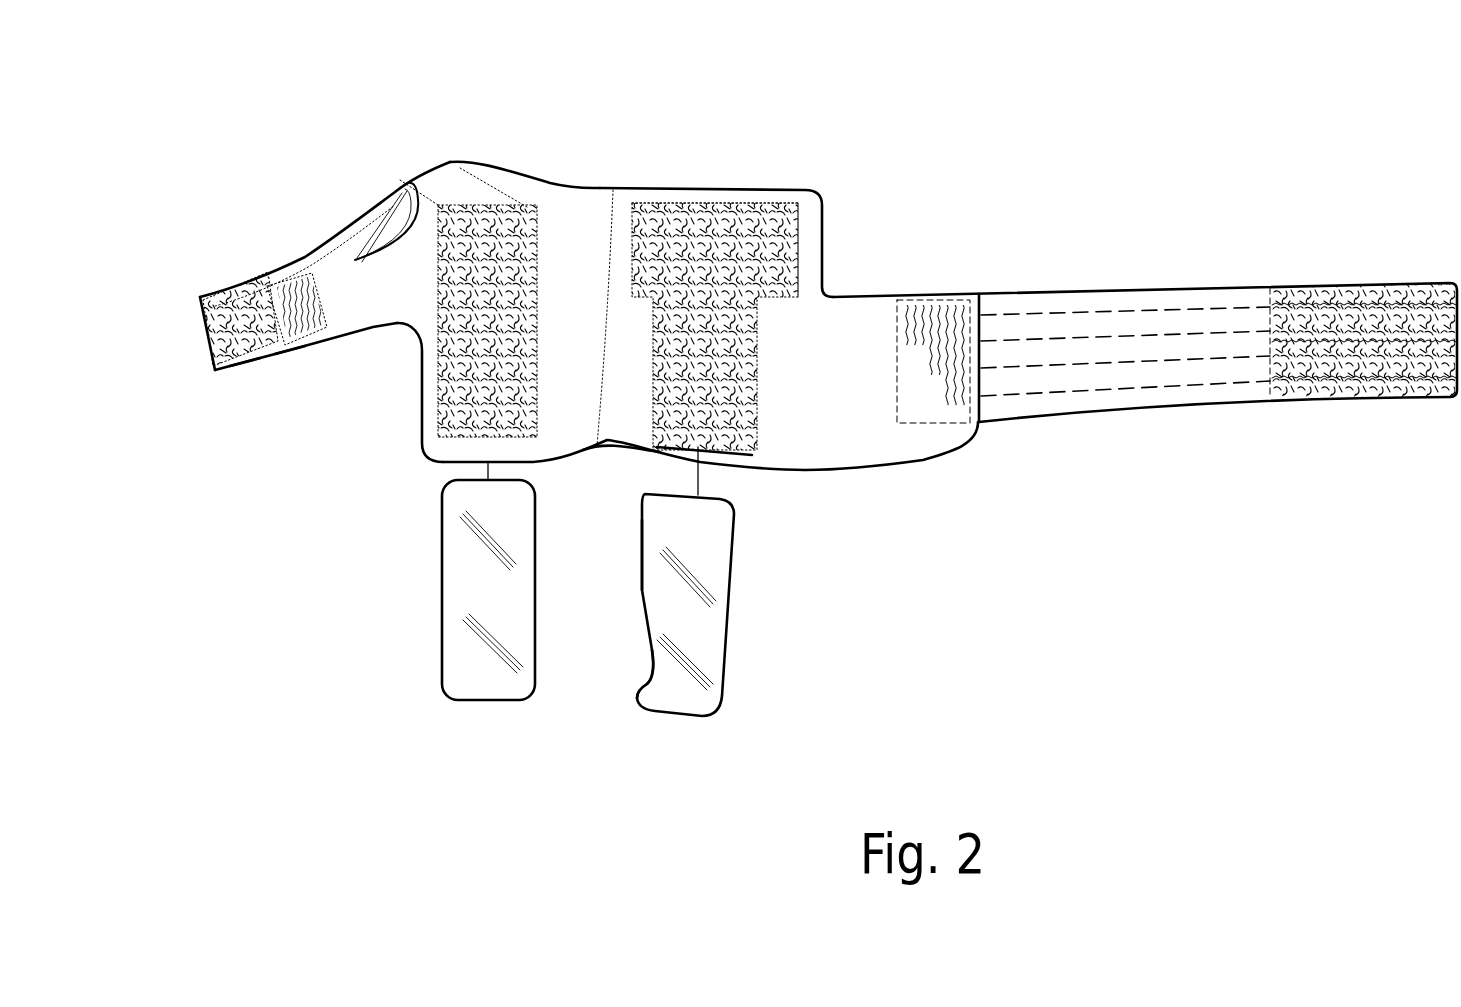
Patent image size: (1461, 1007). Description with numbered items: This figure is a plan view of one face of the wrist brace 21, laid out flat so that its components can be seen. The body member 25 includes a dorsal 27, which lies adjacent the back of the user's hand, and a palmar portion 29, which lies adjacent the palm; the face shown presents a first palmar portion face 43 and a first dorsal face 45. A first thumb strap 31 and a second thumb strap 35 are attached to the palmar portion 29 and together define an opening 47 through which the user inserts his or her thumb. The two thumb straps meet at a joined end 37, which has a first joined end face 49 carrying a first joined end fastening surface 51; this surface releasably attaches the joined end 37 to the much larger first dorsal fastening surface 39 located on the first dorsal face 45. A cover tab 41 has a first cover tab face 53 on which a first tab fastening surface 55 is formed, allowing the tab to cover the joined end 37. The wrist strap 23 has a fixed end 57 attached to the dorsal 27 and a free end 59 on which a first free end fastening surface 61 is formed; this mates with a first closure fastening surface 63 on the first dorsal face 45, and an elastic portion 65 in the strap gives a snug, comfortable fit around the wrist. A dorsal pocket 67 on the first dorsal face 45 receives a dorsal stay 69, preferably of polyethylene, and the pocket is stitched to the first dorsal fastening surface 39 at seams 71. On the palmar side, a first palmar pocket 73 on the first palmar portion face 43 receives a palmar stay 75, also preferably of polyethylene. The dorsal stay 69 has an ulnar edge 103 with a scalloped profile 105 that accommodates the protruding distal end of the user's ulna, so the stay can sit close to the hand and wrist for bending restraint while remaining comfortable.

The wrist brace 21 is at (886, 223).
The wrist strap 23 is at (1215, 275).
The body member 25 is at (676, 124).
The dorsal 27 is at (752, 174).
The palmar portion 29 is at (538, 167).
The first thumb strap 31 is at (340, 247).
The second thumb strap 35 is at (397, 310).
The joined end 37 is at (287, 369).
The first dorsal fastening surface 39 is at (780, 252).
The cover tab 41 is at (212, 284).
The first palmar portion face 43 is at (577, 213).
The first dorsal face 45 is at (633, 415).
The opening 47 is at (387, 232).
The first joined end face 49 is at (317, 338).
The first joined end fastening surface 51 is at (283, 323).
The first cover tab face 53 is at (240, 370).
The first tab fastening surface 55 is at (212, 345).
The fixed end 57 is at (997, 281).
The free end 59 is at (1355, 275).
The first free end fastening surface 61 is at (1363, 387).
The first closure fastening surface 63 is at (920, 390).
The elastic portion 65 is at (1137, 350).
The dorsal pocket 67 is at (720, 447).
The dorsal stay 69 is at (700, 650).
The seams 71 is at (657, 300).
The first palmar pocket 73 is at (443, 427).
The palmar stay 75 is at (450, 597).
The ulnar edge 103 is at (634, 587).
The scalloped profile 105 is at (653, 665).